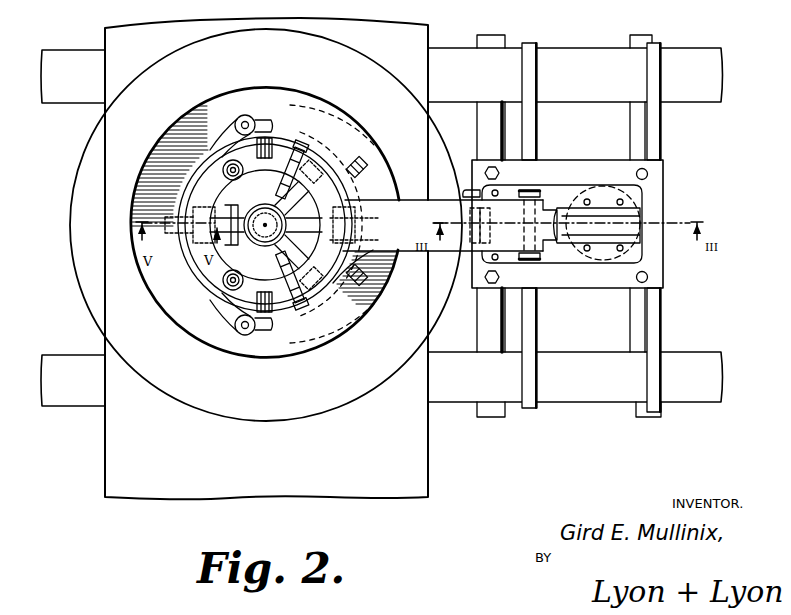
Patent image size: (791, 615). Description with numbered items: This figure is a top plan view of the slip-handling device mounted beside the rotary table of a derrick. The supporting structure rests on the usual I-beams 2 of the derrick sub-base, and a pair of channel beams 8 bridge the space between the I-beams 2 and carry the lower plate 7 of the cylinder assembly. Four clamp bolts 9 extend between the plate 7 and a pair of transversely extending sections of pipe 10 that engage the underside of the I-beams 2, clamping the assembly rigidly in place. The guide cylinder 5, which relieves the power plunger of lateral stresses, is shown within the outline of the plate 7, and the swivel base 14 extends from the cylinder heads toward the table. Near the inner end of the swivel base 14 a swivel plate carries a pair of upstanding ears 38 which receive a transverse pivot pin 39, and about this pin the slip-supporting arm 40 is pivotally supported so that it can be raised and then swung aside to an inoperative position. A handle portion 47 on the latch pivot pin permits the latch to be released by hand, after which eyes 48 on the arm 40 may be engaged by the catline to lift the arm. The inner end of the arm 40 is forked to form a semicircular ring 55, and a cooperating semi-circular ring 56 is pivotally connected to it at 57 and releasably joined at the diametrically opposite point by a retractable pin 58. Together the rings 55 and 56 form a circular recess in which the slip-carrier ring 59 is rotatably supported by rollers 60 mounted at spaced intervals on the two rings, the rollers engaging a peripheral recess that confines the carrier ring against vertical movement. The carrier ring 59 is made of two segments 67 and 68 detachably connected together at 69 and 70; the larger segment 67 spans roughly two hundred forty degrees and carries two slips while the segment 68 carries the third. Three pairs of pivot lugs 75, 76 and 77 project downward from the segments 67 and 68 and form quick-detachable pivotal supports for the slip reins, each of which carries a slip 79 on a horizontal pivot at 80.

The I-beams 2 is at (64, 62).
The guide cylinder 5 is at (632, 203).
The lower plate 7 is at (578, 172).
The channel beams 8 is at (536, 66).
The clamp bolts 9 is at (648, 174).
The sections of pipe 10 is at (484, 322).
The swivel base 14 is at (576, 258).
The upstanding ears 38 is at (530, 192).
The transverse pivot pin 39 is at (546, 219).
The slip-supporting arm 40 is at (417, 204).
The handle portion 47 is at (466, 190).
The eyes 48 is at (363, 165).
The semicircular ring 55 is at (302, 150).
The cooperating semi-circular ring 56 is at (203, 163).
The pivotal connection 57 is at (262, 120).
The retractable pin 58 is at (245, 336).
The slip-carrier ring 59 is at (196, 183).
The rollers 60 is at (283, 140).
The ring segment 67 is at (357, 220).
The ring segment 68 is at (226, 285).
The detachable connection 69 is at (228, 162).
The detachable connection 70 is at (362, 186).
The pivot lugs 75 is at (163, 200).
The pivot lugs 76 is at (332, 162).
The pivot lugs 77 is at (306, 302).
The slip 79 is at (244, 292).
The horizontal pivot 80 is at (322, 292).